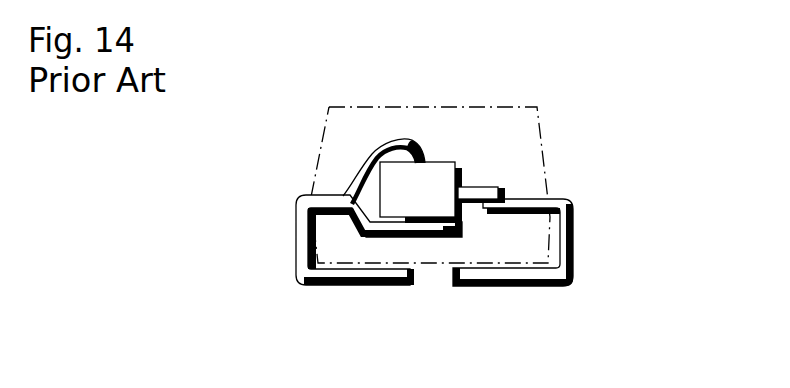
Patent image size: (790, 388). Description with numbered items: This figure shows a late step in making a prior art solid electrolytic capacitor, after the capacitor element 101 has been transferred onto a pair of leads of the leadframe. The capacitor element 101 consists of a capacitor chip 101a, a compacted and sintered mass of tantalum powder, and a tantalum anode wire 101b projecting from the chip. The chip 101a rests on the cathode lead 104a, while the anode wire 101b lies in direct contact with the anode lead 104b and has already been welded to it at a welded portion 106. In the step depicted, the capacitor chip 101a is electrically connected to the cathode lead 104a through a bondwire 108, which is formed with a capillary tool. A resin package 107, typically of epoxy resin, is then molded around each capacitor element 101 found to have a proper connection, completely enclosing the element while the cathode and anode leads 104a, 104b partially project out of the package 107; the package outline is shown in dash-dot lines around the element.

The capacitor element 101 is at (497, 192).
The capacitor chip 101a is at (433, 168).
The anode wire 101b is at (478, 198).
The cathode lead 104a is at (304, 231).
The anode lead 104b is at (560, 245).
The welded portion 106 is at (555, 168).
The resin package 107 is at (463, 107).
The bondwire 108 is at (367, 155).